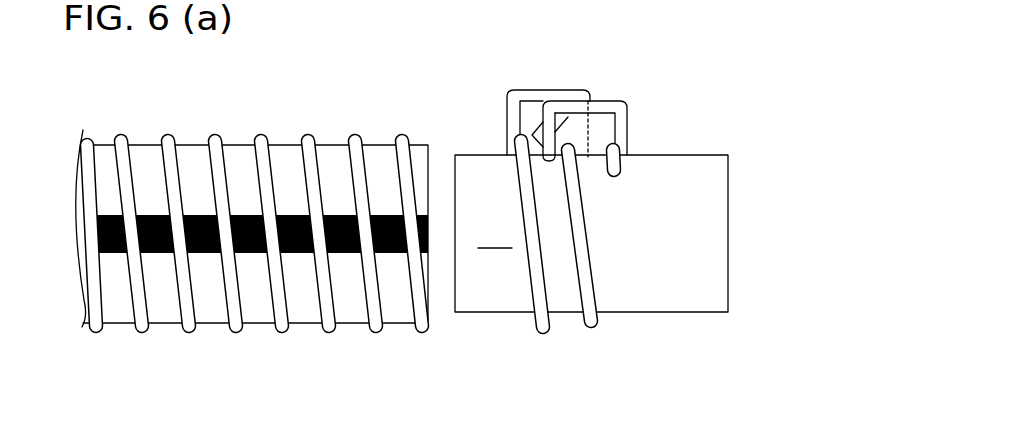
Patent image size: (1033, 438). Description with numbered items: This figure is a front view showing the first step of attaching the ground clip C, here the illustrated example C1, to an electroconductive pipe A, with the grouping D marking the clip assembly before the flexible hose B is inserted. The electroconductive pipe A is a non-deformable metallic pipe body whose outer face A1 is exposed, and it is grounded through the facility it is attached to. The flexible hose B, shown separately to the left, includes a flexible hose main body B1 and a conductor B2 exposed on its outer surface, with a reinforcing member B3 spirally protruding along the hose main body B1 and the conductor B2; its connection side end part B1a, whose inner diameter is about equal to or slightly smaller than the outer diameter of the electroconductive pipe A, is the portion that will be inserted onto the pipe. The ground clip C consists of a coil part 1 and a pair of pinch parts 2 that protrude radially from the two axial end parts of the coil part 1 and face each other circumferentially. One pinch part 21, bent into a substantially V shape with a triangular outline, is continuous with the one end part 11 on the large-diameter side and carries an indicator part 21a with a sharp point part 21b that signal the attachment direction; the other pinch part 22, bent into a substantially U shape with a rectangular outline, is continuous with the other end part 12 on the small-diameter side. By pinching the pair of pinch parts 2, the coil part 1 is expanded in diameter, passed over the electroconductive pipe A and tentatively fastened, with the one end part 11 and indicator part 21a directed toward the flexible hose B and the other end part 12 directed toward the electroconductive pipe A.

The coil part 1 is at (573, 258).
The pair of pinch parts 2 is at (615, 115).
The one end part 11 is at (516, 140).
The other end part 12 is at (622, 168).
The one pinch part 21 is at (615, 129).
The other pinch part 22 is at (607, 100).
The indicator part 21a is at (588, 103).
The sharp point part 21b is at (548, 122).
The electroconductive pipe A is at (591, 269).
The outer face A1 is at (495, 235).
The flexible hose B is at (258, 236).
The hose main body B1 is at (120, 317).
The connection side end part B1a is at (400, 313).
The conductor B2 is at (204, 256).
The reinforcing member B3 is at (323, 328).
The ground clip C is at (601, 274).
The ground clip C1 is at (549, 337).
The connector assembly D is at (570, 199).